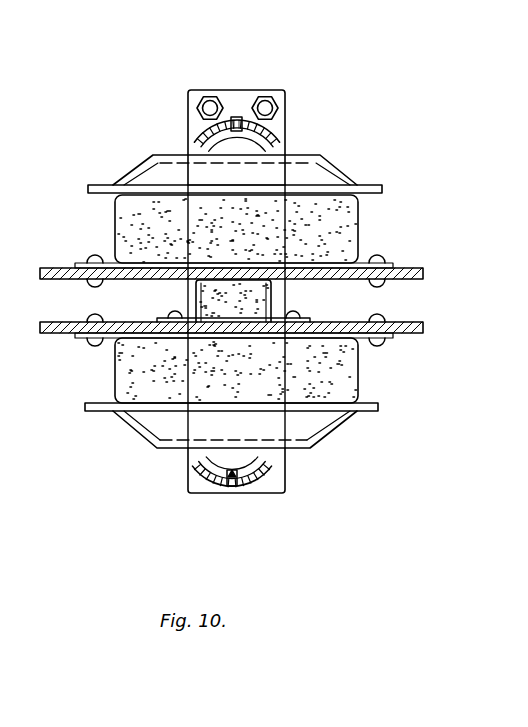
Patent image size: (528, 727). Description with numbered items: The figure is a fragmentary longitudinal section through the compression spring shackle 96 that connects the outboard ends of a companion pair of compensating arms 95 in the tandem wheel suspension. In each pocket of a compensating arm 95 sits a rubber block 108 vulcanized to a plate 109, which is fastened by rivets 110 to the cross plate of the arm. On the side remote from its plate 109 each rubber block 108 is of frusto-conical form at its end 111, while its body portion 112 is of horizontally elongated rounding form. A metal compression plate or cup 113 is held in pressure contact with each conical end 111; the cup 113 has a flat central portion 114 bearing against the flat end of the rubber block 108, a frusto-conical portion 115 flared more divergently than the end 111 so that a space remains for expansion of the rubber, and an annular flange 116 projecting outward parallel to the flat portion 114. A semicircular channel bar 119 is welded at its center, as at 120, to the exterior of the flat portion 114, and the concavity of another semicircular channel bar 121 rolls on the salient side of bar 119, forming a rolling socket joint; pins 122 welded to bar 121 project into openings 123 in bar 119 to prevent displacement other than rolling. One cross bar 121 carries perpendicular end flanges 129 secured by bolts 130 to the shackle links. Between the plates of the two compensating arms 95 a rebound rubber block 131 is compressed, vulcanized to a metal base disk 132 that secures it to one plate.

The compensating arm 95 is at (63, 280).
The shackle 96 is at (317, 86).
The rubber block 108 is at (362, 218).
The plate 109 is at (80, 268).
The rivets 110 is at (100, 260).
The frusto-conical end 111 is at (352, 197).
The body portion 112 is at (358, 239).
The compression plate or cup 113 is at (337, 164).
The flat central portion 114 is at (300, 157).
The frusto-conical portion 115 is at (136, 170).
The annular flange 116 is at (110, 185).
The semicircular channel bar 119 is at (248, 140).
The weld 120 is at (288, 152).
The semicircular channel bar 121 is at (208, 134).
The pins 122 is at (238, 116).
The openings 123 is at (235, 133).
The end flanges 129 is at (217, 90).
The bolts 130 is at (200, 102).
The rebound rubber block 131 is at (280, 291).
The metal base disk 132 is at (160, 318).